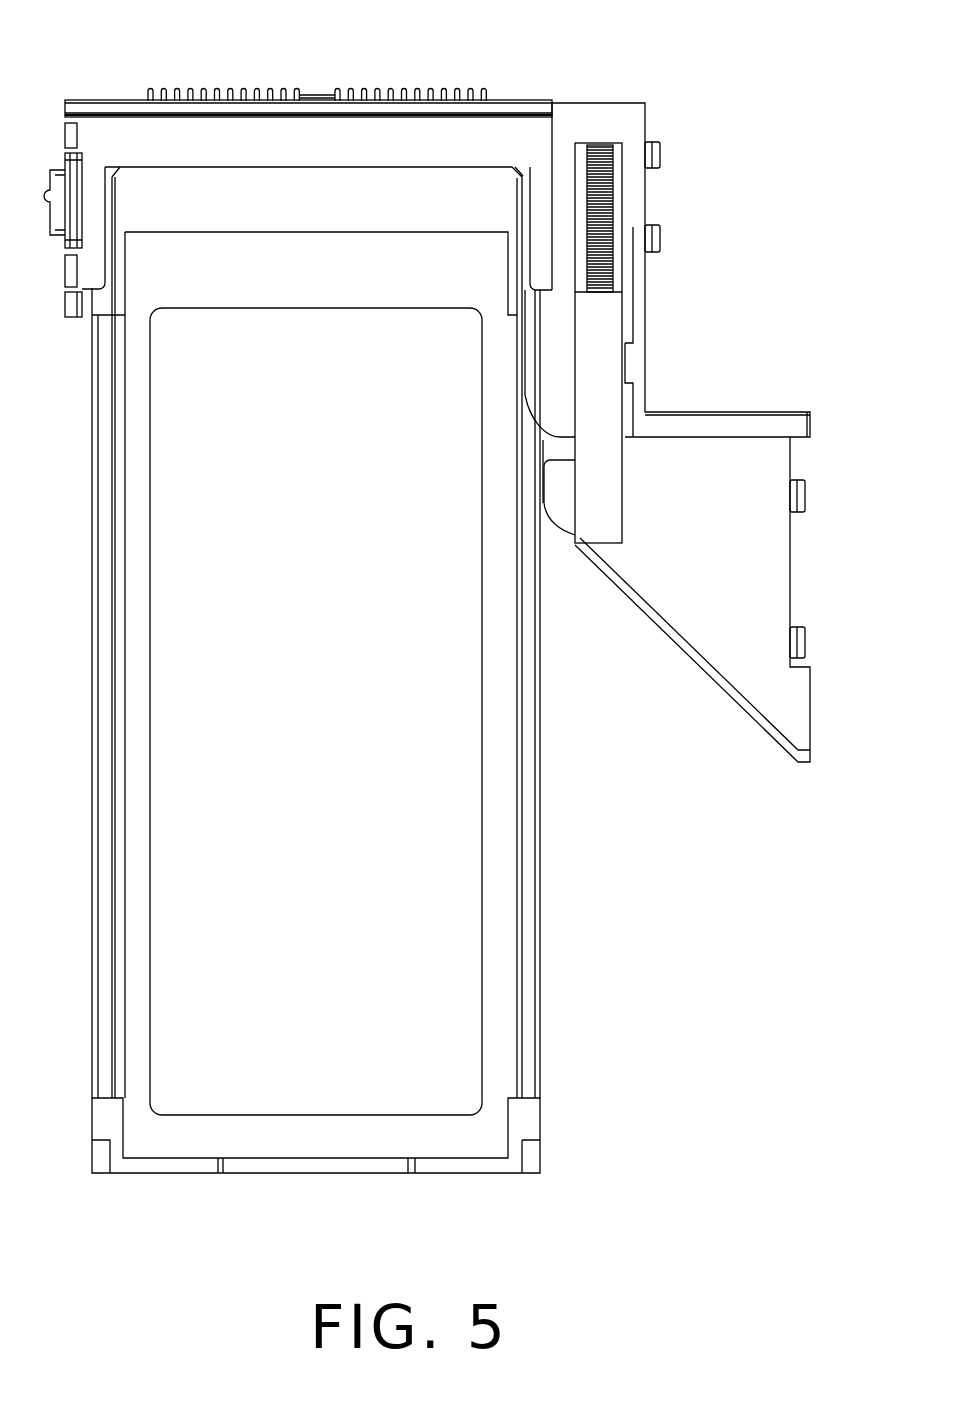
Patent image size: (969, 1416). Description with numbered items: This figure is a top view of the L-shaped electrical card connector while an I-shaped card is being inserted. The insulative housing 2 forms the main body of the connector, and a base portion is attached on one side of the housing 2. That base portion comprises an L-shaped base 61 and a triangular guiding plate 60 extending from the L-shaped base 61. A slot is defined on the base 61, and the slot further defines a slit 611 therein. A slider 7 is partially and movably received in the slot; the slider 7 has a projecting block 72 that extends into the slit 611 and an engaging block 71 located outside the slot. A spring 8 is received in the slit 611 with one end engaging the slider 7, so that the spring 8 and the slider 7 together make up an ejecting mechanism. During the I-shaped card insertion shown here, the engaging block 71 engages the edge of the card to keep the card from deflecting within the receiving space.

The insulative housing 2 is at (497, 148).
The L-shaped base 61 is at (627, 120).
The spring 8 is at (610, 207).
The slit 611 is at (627, 272).
The projecting block 72 is at (627, 362).
The slider 7 is at (607, 453).
The engaging block 71 is at (562, 498).
The triangular guiding plate 60 is at (747, 602).